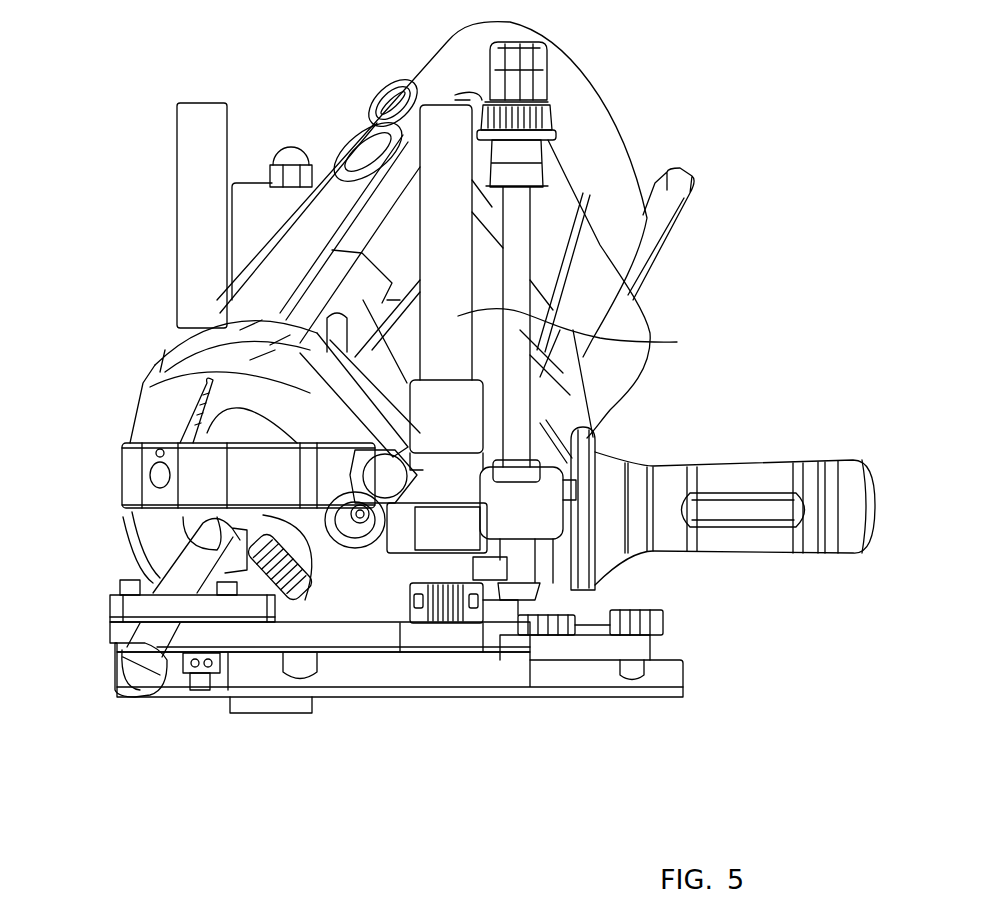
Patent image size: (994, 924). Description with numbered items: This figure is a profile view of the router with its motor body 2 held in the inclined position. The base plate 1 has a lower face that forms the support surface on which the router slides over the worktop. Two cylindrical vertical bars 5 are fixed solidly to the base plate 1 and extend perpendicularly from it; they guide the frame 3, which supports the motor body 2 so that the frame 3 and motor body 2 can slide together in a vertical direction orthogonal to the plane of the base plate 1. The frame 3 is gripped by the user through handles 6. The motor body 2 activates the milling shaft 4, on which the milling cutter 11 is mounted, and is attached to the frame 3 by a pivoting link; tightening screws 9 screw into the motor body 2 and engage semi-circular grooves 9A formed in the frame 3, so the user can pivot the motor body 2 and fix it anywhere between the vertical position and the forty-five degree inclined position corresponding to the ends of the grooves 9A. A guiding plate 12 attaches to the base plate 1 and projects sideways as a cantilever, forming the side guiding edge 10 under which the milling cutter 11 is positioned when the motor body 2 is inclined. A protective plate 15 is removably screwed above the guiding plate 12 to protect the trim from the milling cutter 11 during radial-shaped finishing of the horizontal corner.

The base plate 1 is at (505, 700).
The motor body 2 is at (590, 78).
The frame 3 is at (137, 440).
The milling shaft 4 is at (150, 577).
The cylindrical vertical bars 5 is at (178, 138).
The handles 6 is at (855, 458).
The tightening screws 9 is at (350, 528).
The semi-circular grooves 9A is at (364, 522).
The side guiding edge 10 is at (108, 635).
The milling cutter 11 is at (125, 695).
The guiding plate 12 is at (414, 655).
The protective plate 15 is at (108, 605).